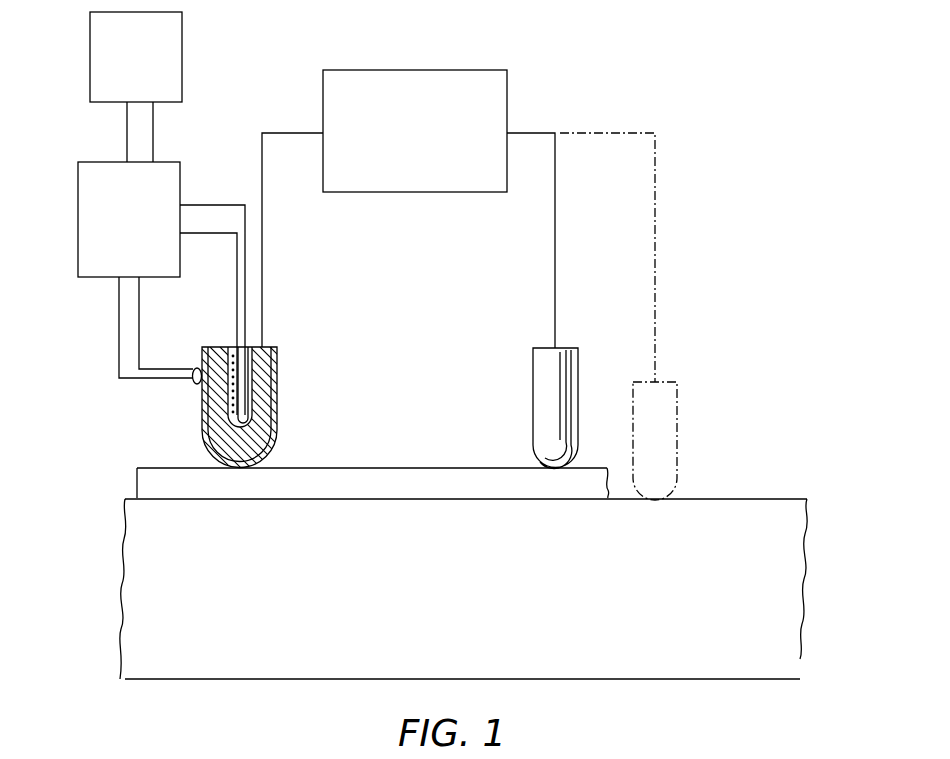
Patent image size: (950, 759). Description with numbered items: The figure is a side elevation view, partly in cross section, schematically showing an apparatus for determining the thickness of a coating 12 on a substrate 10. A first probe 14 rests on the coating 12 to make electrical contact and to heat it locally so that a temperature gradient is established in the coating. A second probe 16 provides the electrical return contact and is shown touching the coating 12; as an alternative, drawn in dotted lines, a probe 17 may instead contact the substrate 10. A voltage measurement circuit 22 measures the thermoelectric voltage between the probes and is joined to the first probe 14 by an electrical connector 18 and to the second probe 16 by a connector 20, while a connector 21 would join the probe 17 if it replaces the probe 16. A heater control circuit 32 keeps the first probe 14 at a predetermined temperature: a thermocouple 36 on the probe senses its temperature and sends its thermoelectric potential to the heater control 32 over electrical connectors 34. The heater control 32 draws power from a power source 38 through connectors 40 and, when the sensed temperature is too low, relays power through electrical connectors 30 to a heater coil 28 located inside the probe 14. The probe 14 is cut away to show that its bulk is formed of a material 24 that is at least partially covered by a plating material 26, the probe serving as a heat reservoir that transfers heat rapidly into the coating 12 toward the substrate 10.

The substrate 10 is at (135, 575).
The coating 12 is at (137, 480).
The first probe 14 is at (202, 408).
The second probe 16 is at (533, 377).
The probe 17 is at (672, 397).
The electrical connector 18 is at (285, 131).
The connector 20 is at (526, 132).
The connector 21 is at (610, 128).
The voltage measurement circuit 22 is at (393, 70).
The material 24 is at (258, 368).
The plating material 26 is at (272, 428).
The heater coil 28 is at (233, 435).
The electrical connectors 30 is at (212, 232).
The heater control circuit 32 is at (78, 220).
The electrical connectors 34 is at (117, 358).
The thermocouple 36 is at (196, 368).
The power source 38 is at (90, 63).
The connectors 40 is at (153, 152).